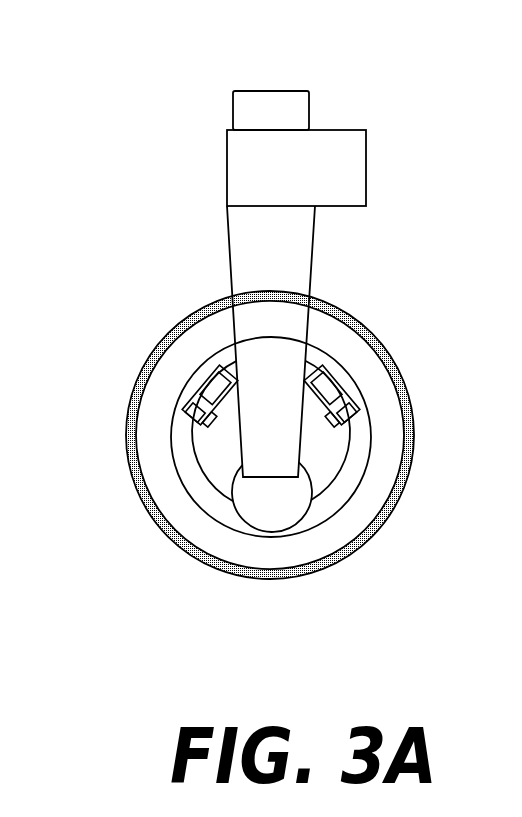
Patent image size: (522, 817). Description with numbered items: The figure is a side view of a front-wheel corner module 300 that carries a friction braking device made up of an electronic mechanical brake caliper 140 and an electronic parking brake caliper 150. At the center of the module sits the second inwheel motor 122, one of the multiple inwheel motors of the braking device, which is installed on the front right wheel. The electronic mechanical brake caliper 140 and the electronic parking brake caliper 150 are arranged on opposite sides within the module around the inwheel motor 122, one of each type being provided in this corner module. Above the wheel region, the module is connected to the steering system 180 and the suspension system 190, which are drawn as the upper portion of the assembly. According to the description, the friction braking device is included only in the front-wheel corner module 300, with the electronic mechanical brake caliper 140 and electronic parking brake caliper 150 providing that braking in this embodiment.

The front-wheel corner module 300 is at (93, 42).
The second inwheel motor 122 is at (275, 528).
The steering system 180 is at (272, 95).
The suspension system 190 is at (350, 137).
The electronic mechanical brake caliper 140 is at (187, 379).
The electronic parking brake caliper 150 is at (363, 378).